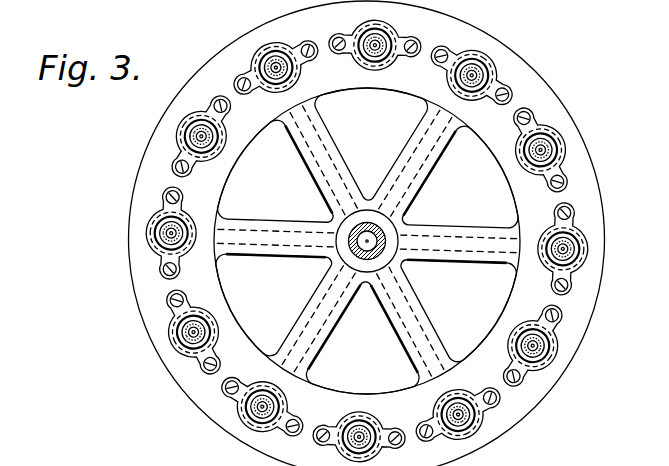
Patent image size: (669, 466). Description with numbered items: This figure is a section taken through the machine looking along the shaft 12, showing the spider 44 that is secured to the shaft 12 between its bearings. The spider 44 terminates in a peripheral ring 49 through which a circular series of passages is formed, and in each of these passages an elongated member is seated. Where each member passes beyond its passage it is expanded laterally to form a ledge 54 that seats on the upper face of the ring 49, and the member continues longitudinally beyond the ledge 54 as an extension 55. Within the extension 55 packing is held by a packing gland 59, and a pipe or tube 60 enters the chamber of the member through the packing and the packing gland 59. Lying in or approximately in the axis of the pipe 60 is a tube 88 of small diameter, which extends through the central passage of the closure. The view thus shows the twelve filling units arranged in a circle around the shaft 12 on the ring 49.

The shaft 12 is at (355, 252).
The spider 44 is at (443, 234).
The peripheral ring 49 is at (590, 190).
The ledge 54 is at (157, 258).
The extension 55 is at (205, 157).
The packing gland 59 is at (278, 82).
The pipe or tube 60 is at (460, 78).
The tube 88 is at (468, 72).